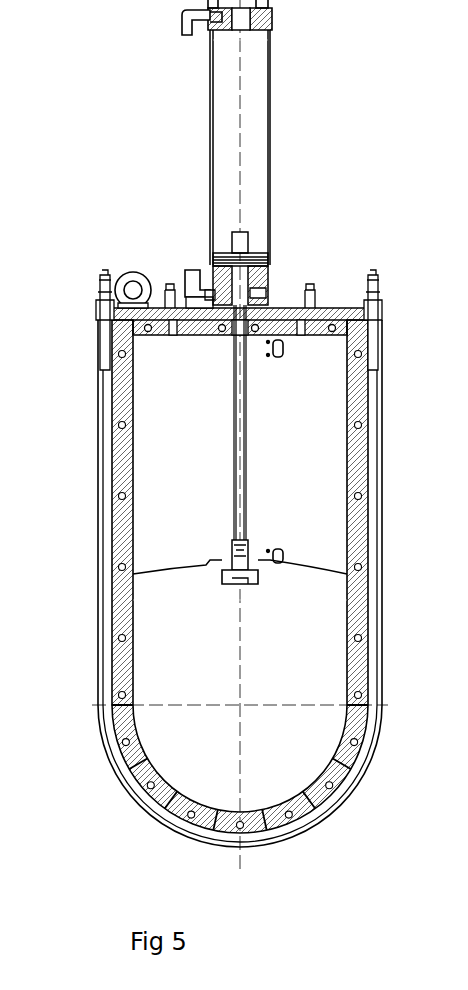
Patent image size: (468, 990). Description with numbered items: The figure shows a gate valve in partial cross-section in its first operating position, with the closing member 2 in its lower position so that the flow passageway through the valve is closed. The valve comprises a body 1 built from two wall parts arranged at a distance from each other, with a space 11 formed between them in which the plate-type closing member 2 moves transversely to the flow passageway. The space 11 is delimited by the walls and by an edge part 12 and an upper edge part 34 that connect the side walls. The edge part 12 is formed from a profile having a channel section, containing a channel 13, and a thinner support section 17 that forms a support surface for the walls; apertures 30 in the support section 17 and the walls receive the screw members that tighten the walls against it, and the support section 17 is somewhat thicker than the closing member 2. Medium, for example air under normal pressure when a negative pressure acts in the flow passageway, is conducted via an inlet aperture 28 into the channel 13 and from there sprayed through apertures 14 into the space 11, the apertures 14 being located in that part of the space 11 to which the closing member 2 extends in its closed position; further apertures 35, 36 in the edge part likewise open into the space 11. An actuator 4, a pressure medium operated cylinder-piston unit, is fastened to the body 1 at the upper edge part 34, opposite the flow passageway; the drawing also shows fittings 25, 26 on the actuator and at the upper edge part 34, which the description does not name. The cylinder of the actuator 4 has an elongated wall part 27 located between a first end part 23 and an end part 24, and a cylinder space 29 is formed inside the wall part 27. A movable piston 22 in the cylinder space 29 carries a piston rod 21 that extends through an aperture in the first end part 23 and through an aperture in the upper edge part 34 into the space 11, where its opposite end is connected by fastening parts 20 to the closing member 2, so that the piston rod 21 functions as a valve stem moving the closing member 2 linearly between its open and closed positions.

The body 1 is at (78, 535).
The closing member 2 is at (320, 680).
The actuator 4 is at (284, 132).
The space 11 is at (158, 418).
The edge part 12 is at (315, 825).
The channel 13 is at (108, 470).
The apertures 14 is at (150, 782).
The support section 17 is at (122, 665).
The fastening parts 20 is at (252, 555).
The piston rod 21 is at (250, 452).
The piston 22 is at (270, 255).
The first end part 23 is at (268, 275).
The end part 24 is at (268, 12).
The connection fitting 25 is at (185, 30).
The connection 26 is at (190, 272).
The wall part 27 is at (272, 195).
The inlet aperture 28 is at (100, 288).
The cylinder space 29 is at (225, 155).
The apertures 30 is at (130, 568).
The upper edge part 34 is at (352, 322).
The aperture 35 is at (196, 296).
The aperture 36 is at (314, 292).